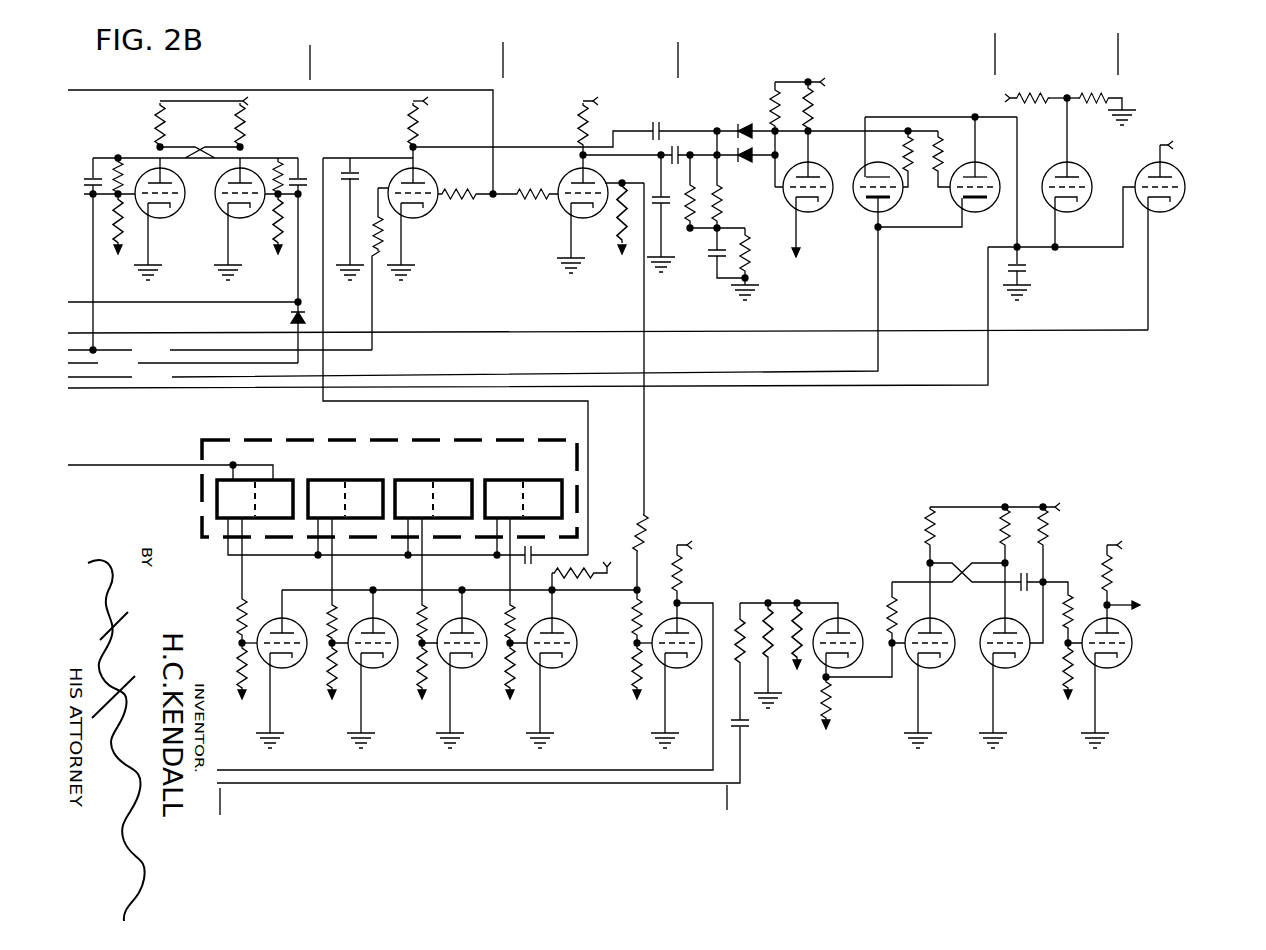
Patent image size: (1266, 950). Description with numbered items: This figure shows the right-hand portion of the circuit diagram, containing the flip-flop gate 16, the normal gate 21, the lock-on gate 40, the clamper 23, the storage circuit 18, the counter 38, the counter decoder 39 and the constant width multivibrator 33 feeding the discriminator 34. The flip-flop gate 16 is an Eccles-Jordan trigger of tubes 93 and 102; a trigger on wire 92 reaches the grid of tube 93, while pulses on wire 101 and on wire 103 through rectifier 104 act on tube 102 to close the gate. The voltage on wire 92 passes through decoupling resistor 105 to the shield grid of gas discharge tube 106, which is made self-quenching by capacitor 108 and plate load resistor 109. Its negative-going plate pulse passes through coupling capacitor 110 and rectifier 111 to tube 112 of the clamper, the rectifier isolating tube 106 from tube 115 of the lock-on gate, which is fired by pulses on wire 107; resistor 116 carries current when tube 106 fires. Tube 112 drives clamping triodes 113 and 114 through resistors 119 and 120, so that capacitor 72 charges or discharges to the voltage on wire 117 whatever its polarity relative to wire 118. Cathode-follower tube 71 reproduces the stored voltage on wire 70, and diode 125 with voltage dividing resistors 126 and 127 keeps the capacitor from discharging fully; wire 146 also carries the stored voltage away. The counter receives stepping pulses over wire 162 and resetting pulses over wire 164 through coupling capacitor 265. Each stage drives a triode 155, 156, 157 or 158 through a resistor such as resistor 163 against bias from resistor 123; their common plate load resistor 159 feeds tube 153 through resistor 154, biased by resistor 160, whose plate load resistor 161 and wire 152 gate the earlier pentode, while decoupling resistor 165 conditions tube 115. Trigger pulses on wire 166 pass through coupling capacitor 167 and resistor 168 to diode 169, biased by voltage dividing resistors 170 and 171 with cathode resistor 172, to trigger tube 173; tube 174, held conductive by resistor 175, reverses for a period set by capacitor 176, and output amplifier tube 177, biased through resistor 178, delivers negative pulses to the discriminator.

The flip-flop gate 16 is at (608, 262).
The normal gate 21 is at (474, 298).
The lock-on gate 40 is at (595, 317).
The clamper 23 is at (877, 171).
The storage circuit 18 is at (1089, 181).
The counter 38 is at (432, 440).
The counter decoder 39 is at (514, 666).
The constant width multivibrator 33 is at (1026, 656).
The discriminator 34 is at (1173, 610).
The wire 107 is at (78, 92).
The tube 93 is at (165, 215).
The tube 102 is at (243, 216).
The wire 101 is at (142, 302).
The rectifier 104 is at (291, 319).
The wire 70 is at (130, 325).
The wire 92 is at (220, 354).
The wire 103 is at (183, 364).
The wire 117 is at (890, 291).
The wire 146 is at (112, 390).
The wire 162 is at (82, 470).
The capacitor 108 is at (362, 219).
The plate load resistor 109 is at (417, 134).
The gas discharge tube 106 is at (418, 215).
The decoupling resistor 105 is at (377, 262).
The wire 164 is at (592, 438).
The gas discharge tube 115 is at (558, 213).
The coupling capacitor 110 is at (656, 124).
The rectifier 111 is at (744, 121).
The decoupling resistor 165 is at (657, 520).
The resistor 116 is at (773, 103).
The tube 112 is at (805, 212).
The resistor 119 is at (906, 158).
The resistor 120 is at (944, 150).
The clamping triode tube 113 is at (893, 210).
The clamping triode tube 114 is at (987, 213).
The voltage dividing resistor 126 is at (1049, 104).
The voltage dividing resistor 127 is at (1090, 104).
The diode 125 is at (1085, 166).
The wire 118 is at (1018, 166).
The capacitor 72 is at (1027, 272).
The cathode-follower tube 71 is at (1172, 206).
The coupling capacitor 265 is at (534, 553).
The resistor 163 is at (238, 618).
The resistor 123 is at (238, 671).
The triode amplifier tube 155 is at (300, 619).
The triode amplifier tube 156 is at (383, 628).
The triode amplifier tube 157 is at (472, 628).
The triode amplifier tube 158 is at (562, 628).
The common plate load resistor 159 is at (590, 577).
The resistor 154 is at (633, 619).
The resistor 160 is at (626, 671).
The plate load resistor 161 is at (683, 574).
The triode amplifier tube 153 is at (683, 663).
The wire 152 is at (230, 773).
The wire 166 is at (225, 786).
The coupling capacitor 167 is at (746, 724).
The resistor 168 is at (733, 615).
The voltage dividing resistor 170 is at (806, 621).
The voltage dividing resistor 171 is at (767, 656).
The diode 169 is at (840, 619).
The resistor 172 is at (830, 713).
The resistor 175 is at (1047, 535).
The capacitor 176 is at (1030, 595).
The tube 173 is at (932, 683).
The tube 174 is at (1007, 683).
The resistor 178 is at (1062, 684).
The output amplifier tube 177 is at (1120, 663).